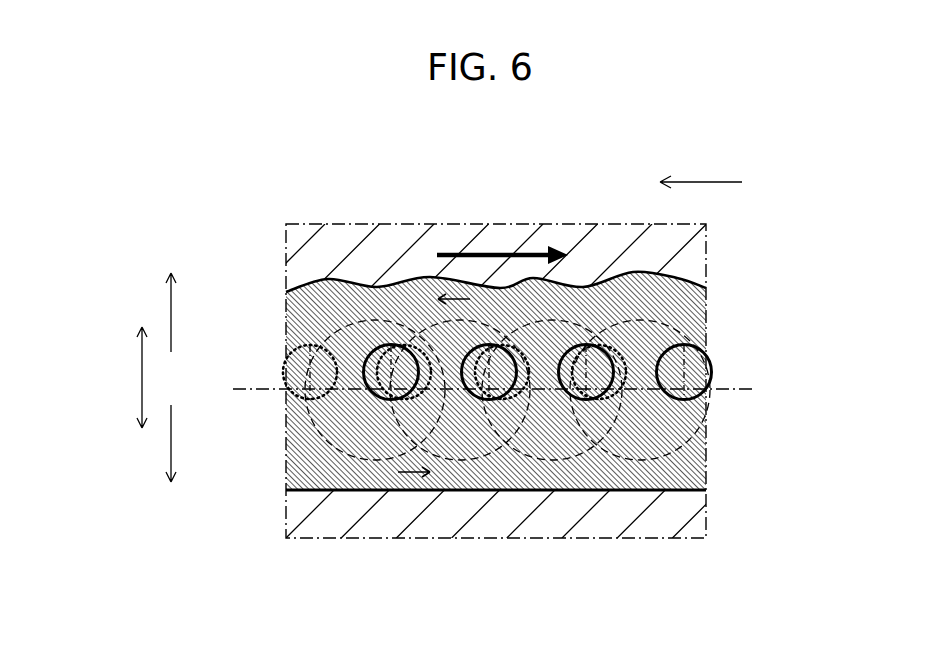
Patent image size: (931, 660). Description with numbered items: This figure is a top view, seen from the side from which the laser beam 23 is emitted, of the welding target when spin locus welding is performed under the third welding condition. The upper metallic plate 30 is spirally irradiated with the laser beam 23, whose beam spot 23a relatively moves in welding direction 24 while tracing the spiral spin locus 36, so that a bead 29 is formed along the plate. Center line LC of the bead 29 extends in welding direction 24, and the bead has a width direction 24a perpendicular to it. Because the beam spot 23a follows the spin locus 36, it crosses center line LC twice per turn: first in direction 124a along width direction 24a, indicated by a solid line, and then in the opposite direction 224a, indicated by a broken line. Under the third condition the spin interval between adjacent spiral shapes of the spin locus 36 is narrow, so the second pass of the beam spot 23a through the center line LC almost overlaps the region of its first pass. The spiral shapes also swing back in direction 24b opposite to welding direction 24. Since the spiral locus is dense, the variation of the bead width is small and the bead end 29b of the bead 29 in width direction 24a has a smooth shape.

The laser beam 23 is at (497, 467).
The beam spot 23a is at (390, 342).
The welding direction 24 is at (483, 254).
The width direction 24a is at (142, 370).
The direction 124a is at (168, 308).
The direction 224a is at (170, 453).
The direction opposite to welding direction 24b is at (687, 182).
The bead 29 is at (490, 480).
The bead end 29b is at (632, 272).
The metallic plate 30 is at (315, 248).
The spin locus 36 is at (595, 462).
The center line LC is at (739, 383).